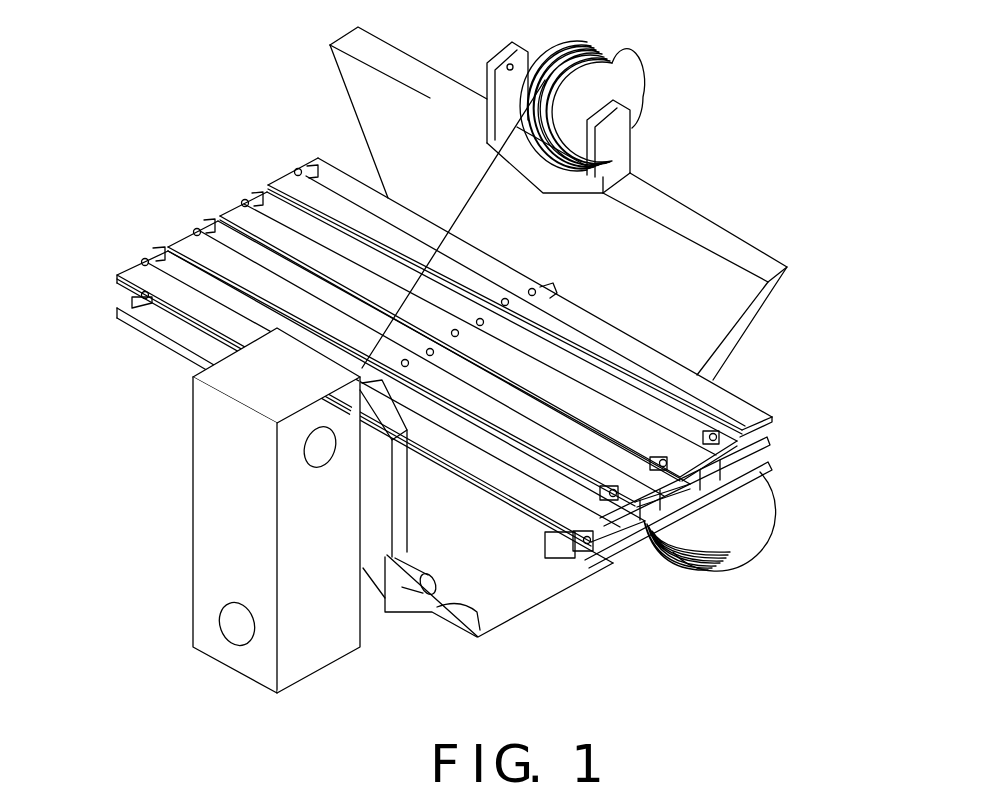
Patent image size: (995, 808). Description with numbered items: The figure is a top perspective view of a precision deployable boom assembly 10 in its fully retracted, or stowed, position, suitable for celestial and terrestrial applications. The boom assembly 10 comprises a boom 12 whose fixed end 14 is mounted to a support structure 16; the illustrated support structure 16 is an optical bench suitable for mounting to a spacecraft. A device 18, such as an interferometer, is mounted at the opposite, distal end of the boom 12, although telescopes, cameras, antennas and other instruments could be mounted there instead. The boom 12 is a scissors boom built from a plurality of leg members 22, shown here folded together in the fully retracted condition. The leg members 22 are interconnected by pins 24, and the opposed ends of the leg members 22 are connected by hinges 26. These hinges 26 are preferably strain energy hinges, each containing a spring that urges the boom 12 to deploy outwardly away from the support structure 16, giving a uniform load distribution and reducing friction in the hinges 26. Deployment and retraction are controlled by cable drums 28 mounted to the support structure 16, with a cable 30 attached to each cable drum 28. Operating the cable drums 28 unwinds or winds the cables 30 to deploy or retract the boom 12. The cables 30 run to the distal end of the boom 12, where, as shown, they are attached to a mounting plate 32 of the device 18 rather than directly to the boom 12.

The precision deployable boom assembly 10 is at (142, 232).
The boom 12 is at (218, 217).
The fixed end 14 is at (605, 330).
The support structure 16 is at (748, 310).
The device 18 is at (193, 447).
The leg members 22 is at (133, 273).
The pins 24 is at (545, 282).
The hinges 26 is at (302, 165).
The cable drums 28 is at (630, 83).
The cables 30 is at (460, 217).
The mounting plate 32 is at (383, 577).